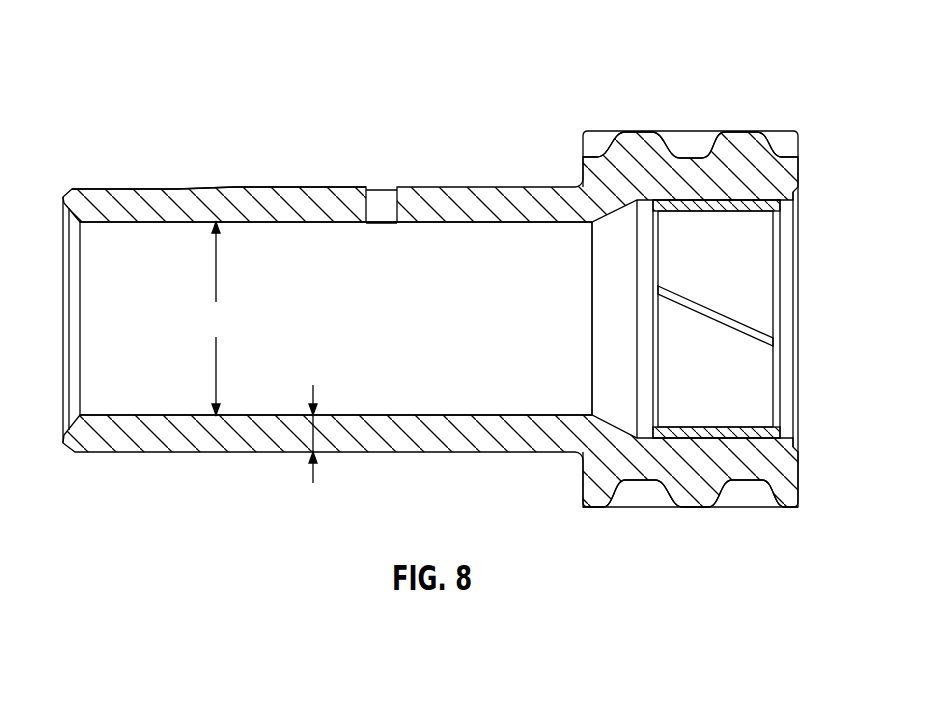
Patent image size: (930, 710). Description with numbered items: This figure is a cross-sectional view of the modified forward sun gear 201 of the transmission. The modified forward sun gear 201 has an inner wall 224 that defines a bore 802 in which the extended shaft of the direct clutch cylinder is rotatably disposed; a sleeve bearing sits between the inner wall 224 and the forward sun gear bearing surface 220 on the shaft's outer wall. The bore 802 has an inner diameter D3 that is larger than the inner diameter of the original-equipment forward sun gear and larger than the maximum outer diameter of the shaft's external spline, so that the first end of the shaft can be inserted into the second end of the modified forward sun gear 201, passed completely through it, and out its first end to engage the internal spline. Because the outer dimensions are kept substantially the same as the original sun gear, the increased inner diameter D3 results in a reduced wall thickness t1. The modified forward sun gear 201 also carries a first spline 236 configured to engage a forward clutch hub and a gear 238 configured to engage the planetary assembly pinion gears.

The modified forward sun gear 201 is at (531, 68).
The first spline 236 is at (117, 187).
The inner wall 224 is at (117, 222).
The bore 802 is at (420, 339).
The gear 238 is at (697, 142).
The forward sun gear bearing surface 220 is at (725, 209).
The inner diameter D3 is at (216, 318).
The wall thickness t1 is at (314, 395).